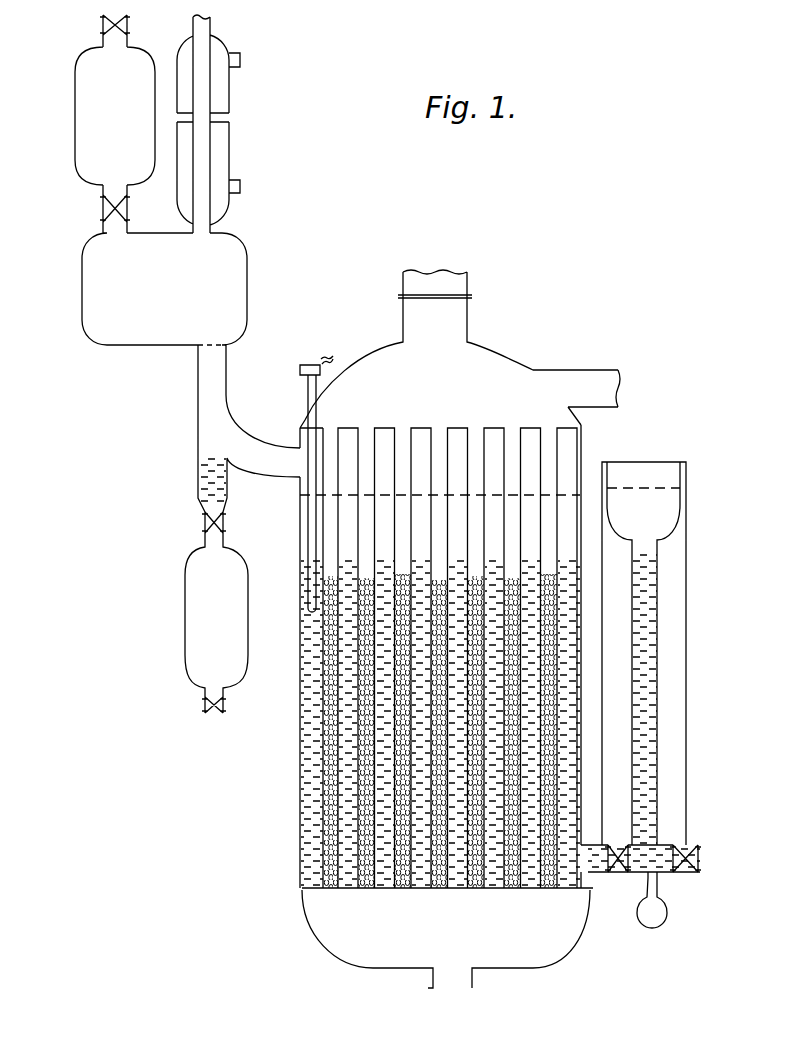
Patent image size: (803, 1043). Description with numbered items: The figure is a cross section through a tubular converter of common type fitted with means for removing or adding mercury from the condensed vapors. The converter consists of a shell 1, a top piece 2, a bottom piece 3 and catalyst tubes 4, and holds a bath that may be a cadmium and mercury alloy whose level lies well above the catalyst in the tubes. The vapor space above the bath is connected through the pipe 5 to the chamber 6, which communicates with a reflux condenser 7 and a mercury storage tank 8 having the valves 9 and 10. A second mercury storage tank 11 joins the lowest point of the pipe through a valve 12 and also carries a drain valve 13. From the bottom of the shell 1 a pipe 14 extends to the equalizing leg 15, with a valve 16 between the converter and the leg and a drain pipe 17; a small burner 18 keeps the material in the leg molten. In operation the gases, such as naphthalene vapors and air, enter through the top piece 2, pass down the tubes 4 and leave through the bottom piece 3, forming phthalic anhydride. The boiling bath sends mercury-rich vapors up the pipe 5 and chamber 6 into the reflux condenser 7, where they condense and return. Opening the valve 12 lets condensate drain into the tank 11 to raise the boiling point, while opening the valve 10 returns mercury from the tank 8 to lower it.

The shell 1 is at (567, 447).
The top piece 2 is at (491, 357).
The bottom piece 3 is at (538, 948).
The catalyst tubes 4 is at (300, 790).
The pipe 5 is at (228, 378).
The chamber 6 is at (247, 275).
The reflux condenser 7 is at (202, 83).
The mercury storage tank 8 is at (75, 99).
The valve 9 is at (103, 24).
The valve 10 is at (103, 202).
The second mercury storage tank 11 is at (185, 606).
The valve 12 is at (225, 524).
The drain valve 13 is at (207, 703).
The pipe 14 is at (642, 873).
The equalizing leg 15 is at (693, 573).
The valve 16 is at (618, 843).
The drain pipe 17 is at (685, 845).
The small burner 18 is at (658, 915).